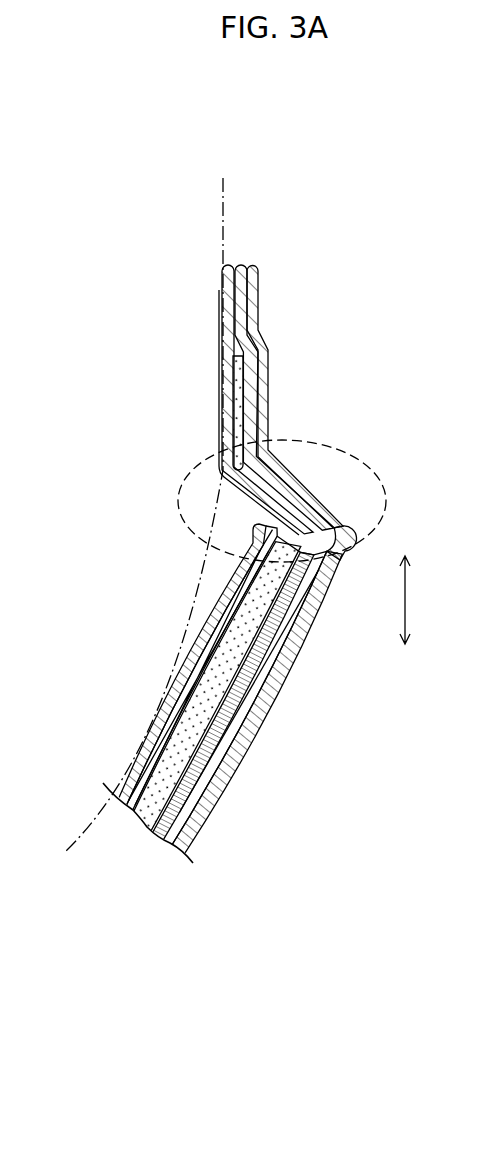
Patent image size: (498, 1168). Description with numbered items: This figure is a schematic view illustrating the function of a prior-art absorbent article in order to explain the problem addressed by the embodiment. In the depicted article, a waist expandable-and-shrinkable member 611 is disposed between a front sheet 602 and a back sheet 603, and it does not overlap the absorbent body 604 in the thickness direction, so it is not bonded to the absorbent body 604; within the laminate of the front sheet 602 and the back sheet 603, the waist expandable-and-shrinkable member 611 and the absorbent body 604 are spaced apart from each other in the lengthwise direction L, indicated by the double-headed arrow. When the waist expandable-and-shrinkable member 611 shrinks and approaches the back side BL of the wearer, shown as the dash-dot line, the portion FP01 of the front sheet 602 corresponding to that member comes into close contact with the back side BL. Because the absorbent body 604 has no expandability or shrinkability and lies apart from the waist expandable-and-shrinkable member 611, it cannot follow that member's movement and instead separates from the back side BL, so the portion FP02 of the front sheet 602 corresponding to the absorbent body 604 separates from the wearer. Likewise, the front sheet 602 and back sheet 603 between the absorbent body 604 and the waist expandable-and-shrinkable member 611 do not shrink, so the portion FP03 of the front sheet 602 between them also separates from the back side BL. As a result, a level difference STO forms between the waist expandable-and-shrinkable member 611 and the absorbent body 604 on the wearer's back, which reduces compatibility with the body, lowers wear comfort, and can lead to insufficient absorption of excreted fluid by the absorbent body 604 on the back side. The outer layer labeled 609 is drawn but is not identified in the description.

The front sheet 602 is at (110, 803).
The back sheet 603 is at (157, 840).
The absorbent body 604 is at (141, 831).
The outer cover layer 609 is at (210, 820).
The waist expandable-and-shrinkable member 611 is at (246, 385).
The back side of the wearer BL is at (223, 191).
The portion of the front sheet corresponding to the waist expandable-and-shrinkable FP01 is at (207, 390).
The portion of the front sheet corresponding to the absorbent body FP02 is at (226, 573).
The portion of the front sheet between the absorbent body and the waist expandable-a FP03 is at (349, 460).
The level difference STO is at (349, 512).
The lengthwise direction L is at (418, 595).